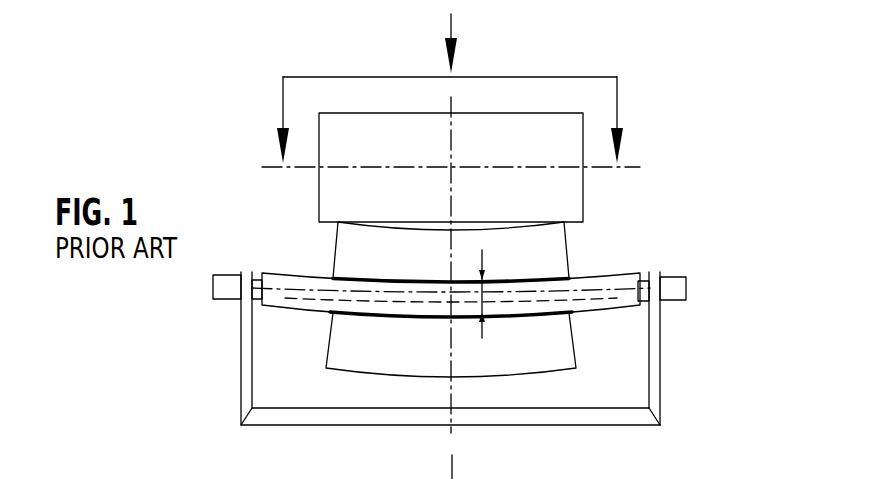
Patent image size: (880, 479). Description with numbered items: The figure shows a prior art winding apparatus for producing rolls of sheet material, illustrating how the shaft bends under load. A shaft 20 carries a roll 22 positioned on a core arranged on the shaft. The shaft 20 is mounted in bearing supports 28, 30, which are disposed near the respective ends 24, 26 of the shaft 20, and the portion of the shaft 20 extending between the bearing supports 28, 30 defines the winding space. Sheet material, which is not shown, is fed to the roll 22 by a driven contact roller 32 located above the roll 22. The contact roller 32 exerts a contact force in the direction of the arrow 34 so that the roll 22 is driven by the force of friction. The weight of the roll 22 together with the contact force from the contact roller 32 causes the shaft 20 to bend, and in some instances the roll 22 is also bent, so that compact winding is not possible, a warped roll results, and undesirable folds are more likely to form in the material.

The shaft 20 is at (282, 272).
The roll 22 is at (326, 340).
The end of the shaft 24 is at (215, 300).
The end of the shaft 26 is at (672, 300).
The bearing support 28 is at (241, 380).
The bearing support 30 is at (660, 392).
The driven contact roller 32 is at (583, 196).
The arrow 34 is at (451, 14).